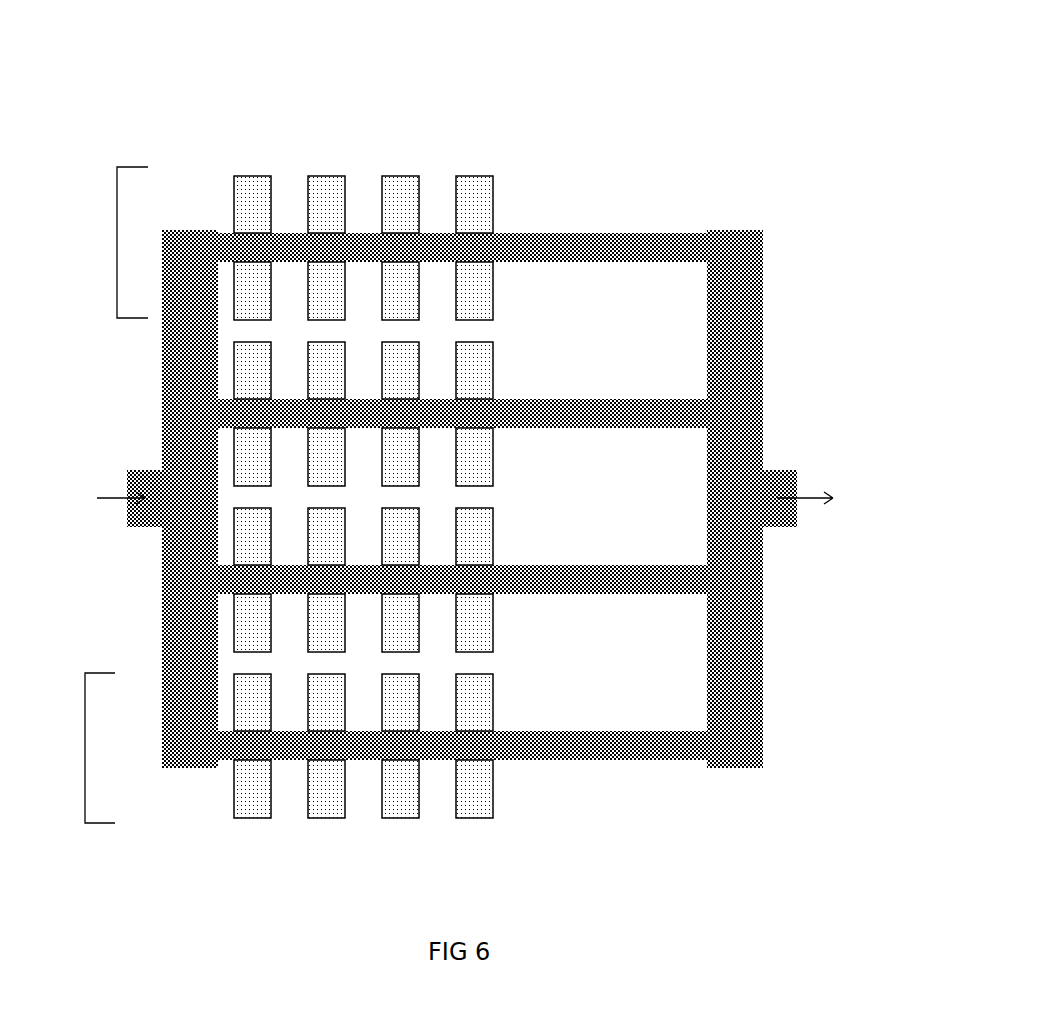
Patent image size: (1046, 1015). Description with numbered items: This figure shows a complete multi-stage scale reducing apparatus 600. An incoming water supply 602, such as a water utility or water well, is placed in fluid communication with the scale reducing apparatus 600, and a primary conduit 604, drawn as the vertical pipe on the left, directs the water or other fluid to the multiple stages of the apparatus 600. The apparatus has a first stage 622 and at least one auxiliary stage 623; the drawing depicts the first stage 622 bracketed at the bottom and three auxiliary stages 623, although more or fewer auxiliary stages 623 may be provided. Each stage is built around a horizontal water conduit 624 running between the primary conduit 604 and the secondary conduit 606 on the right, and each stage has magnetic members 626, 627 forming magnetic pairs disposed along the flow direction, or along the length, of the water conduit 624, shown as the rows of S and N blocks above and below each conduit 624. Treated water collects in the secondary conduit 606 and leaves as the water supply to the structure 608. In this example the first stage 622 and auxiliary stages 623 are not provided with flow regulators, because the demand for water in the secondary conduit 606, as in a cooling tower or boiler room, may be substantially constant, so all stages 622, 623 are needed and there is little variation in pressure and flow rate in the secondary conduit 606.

The scale reducing apparatus 600 is at (145, 88).
The incoming water supply 602 is at (67, 540).
The primary conduit 604 is at (185, 702).
The secondary conduit 606 is at (727, 290).
The water supply outlet to structure 608 is at (885, 537).
The first stage 622 is at (85, 782).
The auxiliary stage 623 is at (117, 276).
The water conduit 624 is at (288, 236).
The magnetic member 626 is at (363, 459).
The magnetic member 627 is at (420, 295).